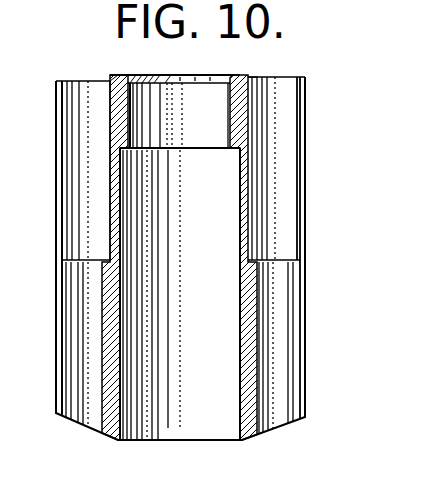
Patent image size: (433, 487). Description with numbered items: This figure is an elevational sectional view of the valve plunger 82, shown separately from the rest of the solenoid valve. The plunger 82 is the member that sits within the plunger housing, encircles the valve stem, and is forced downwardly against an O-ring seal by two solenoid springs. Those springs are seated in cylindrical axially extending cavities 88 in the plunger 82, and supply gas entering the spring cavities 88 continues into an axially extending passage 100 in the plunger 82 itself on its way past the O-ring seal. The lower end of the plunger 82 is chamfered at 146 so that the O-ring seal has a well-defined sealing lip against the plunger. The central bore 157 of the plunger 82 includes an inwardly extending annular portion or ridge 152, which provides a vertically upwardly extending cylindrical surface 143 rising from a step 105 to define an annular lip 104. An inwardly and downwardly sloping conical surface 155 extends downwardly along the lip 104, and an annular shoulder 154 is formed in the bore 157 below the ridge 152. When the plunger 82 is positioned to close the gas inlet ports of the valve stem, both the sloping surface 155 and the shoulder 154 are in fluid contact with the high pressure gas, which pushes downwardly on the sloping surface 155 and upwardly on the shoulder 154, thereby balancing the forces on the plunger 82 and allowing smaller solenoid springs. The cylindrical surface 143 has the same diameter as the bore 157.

The valve plunger 82 is at (305, 292).
The cylindrical axially extending cavities 88 is at (66, 128).
The axially extending passage 100 is at (78, 360).
The annular lip 104 is at (238, 76).
The step 105 is at (249, 78).
The cylindrical surface 143 is at (118, 75).
The chamfer 146 is at (257, 438).
The inwardly extending annular portion 152 is at (228, 103).
The annular shoulder 154 is at (126, 152).
The conical surface 155 is at (126, 76).
The bore 157 is at (122, 388).